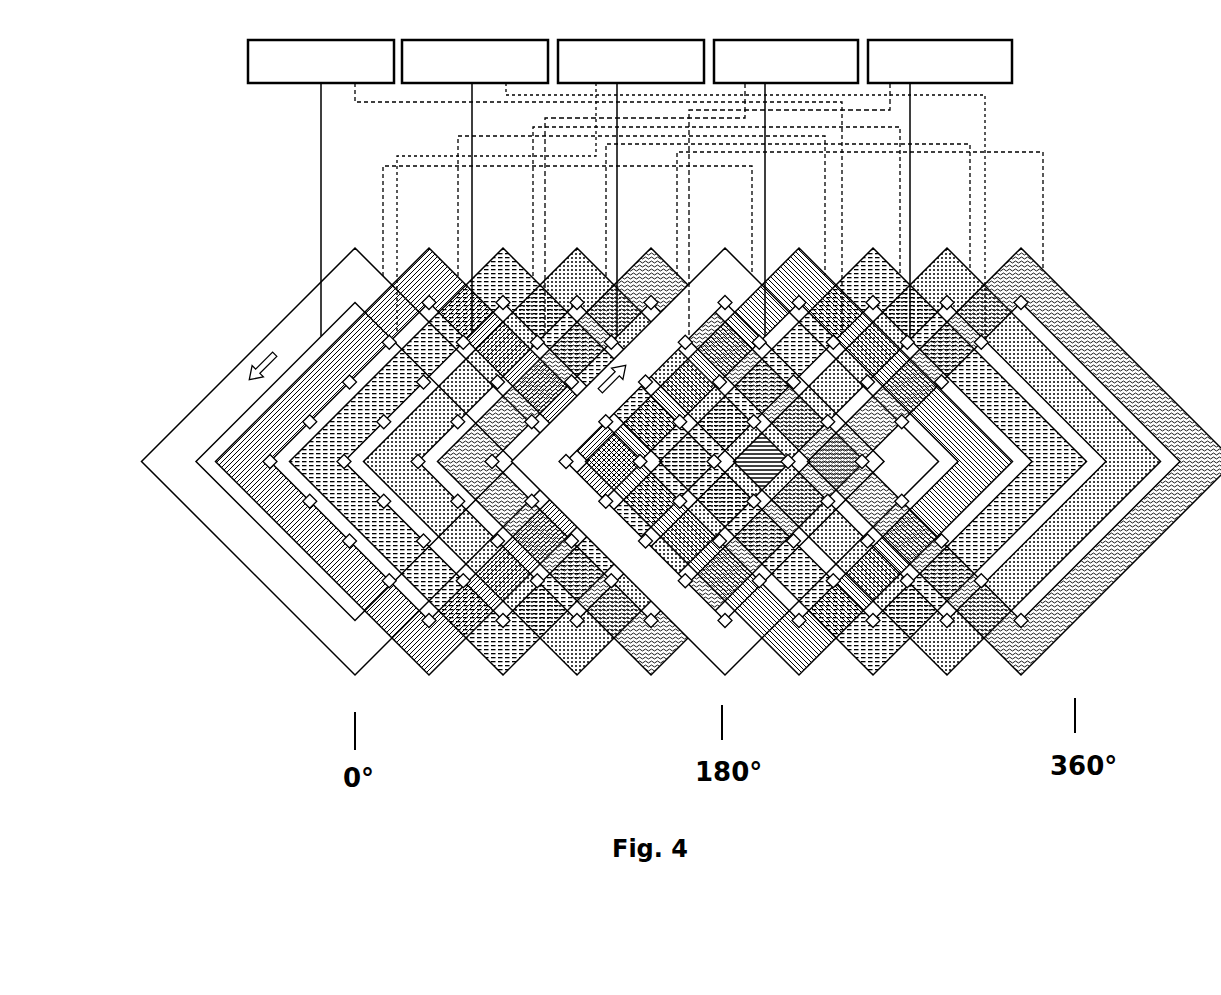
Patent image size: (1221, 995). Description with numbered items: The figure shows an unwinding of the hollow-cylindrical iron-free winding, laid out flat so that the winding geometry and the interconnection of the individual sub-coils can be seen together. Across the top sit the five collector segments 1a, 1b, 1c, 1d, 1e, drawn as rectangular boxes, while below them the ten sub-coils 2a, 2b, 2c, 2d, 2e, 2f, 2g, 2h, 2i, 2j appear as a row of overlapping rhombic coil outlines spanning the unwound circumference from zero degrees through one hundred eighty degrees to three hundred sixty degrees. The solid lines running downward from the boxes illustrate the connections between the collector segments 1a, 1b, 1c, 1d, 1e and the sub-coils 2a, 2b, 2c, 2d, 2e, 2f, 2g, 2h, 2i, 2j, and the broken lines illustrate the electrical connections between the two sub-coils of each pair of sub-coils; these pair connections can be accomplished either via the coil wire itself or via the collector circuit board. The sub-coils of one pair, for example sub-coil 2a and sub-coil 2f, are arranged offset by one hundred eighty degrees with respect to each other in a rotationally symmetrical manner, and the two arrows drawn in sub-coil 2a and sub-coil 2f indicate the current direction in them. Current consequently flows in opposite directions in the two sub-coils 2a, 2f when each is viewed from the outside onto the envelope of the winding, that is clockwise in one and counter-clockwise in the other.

The collector segment 1a is at (321, 61).
The collector segment 1b is at (475, 61).
The collector segment 1c is at (631, 61).
The collector segment 1d is at (786, 61).
The collector segment 1e is at (940, 61).
The sub-coil 2a is at (355, 465).
The sub-coil 2b is at (429, 465).
The sub-coil 2c is at (503, 465).
The sub-coil 2d is at (577, 465).
The sub-coil 2e is at (651, 465).
The sub-coil 2f is at (725, 465).
The sub-coil 2g is at (799, 465).
The sub-coil 2h is at (873, 465).
The sub-coil 2i is at (947, 465).
The sub-coil 2j is at (1015, 465).